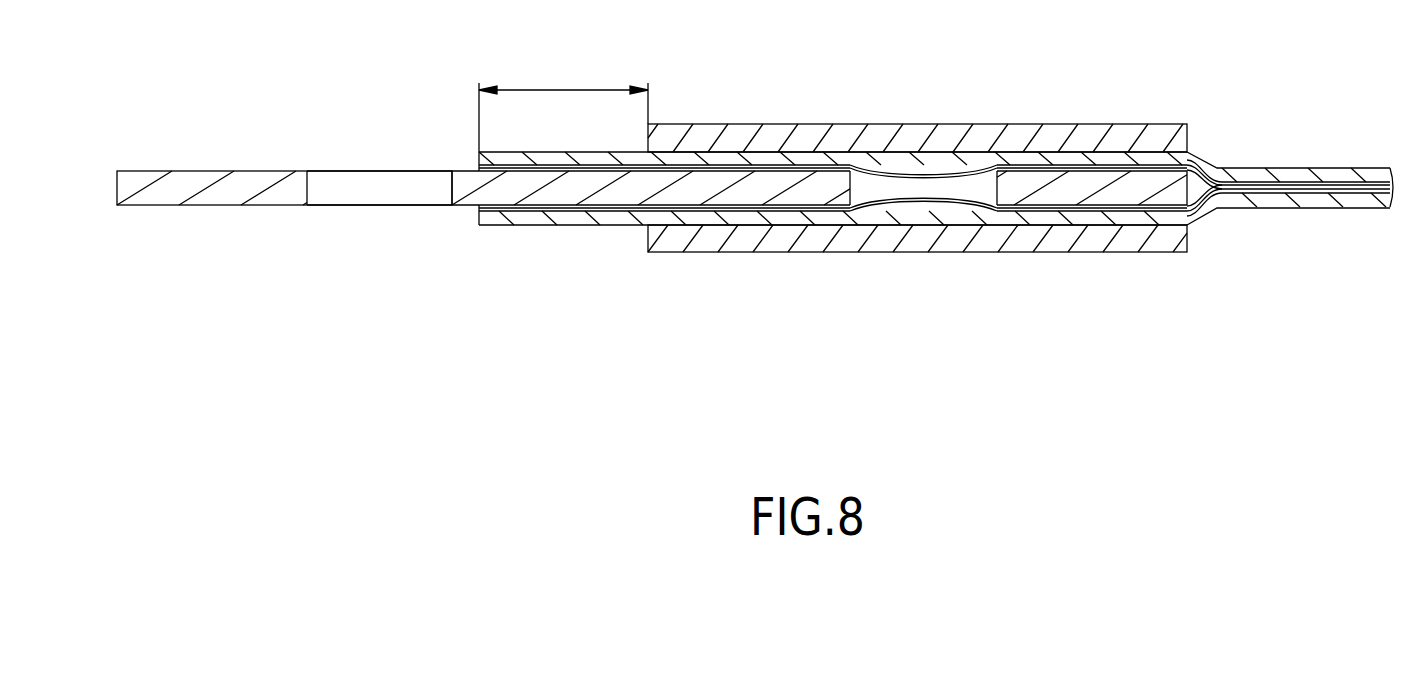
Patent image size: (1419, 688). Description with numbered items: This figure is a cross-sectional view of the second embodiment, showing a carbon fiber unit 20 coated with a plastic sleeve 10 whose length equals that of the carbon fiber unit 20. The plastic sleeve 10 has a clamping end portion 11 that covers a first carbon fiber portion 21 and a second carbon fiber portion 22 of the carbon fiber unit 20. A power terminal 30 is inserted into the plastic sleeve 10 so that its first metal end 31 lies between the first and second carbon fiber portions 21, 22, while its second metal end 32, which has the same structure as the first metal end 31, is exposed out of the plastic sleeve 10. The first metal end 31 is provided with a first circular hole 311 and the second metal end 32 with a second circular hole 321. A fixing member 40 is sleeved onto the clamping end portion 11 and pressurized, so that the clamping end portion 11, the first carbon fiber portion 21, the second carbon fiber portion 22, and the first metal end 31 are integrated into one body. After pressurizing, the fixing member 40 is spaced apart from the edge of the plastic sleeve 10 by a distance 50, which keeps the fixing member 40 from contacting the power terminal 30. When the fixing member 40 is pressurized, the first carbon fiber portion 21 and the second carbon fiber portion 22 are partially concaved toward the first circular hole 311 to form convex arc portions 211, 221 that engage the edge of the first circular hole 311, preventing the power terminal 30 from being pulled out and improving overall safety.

The plastic sleeve 10 is at (1316, 155).
The clamping end portion 11 is at (1170, 159).
The carbon fiber unit 20 is at (1133, 152).
The first carbon fiber portion 21 is at (1074, 165).
The convex arc portion 211 is at (917, 172).
The second carbon fiber portion 22 is at (1036, 210).
The convex arc portion 221 is at (930, 206).
The power terminal 30 is at (249, 158).
The first metal end 31 is at (1115, 194).
The first circular hole 311 is at (895, 190).
The second metal end 32 is at (147, 197).
The second circular hole 321 is at (373, 189).
The fixing member 40 is at (993, 112).
The distance 50 is at (550, 88).